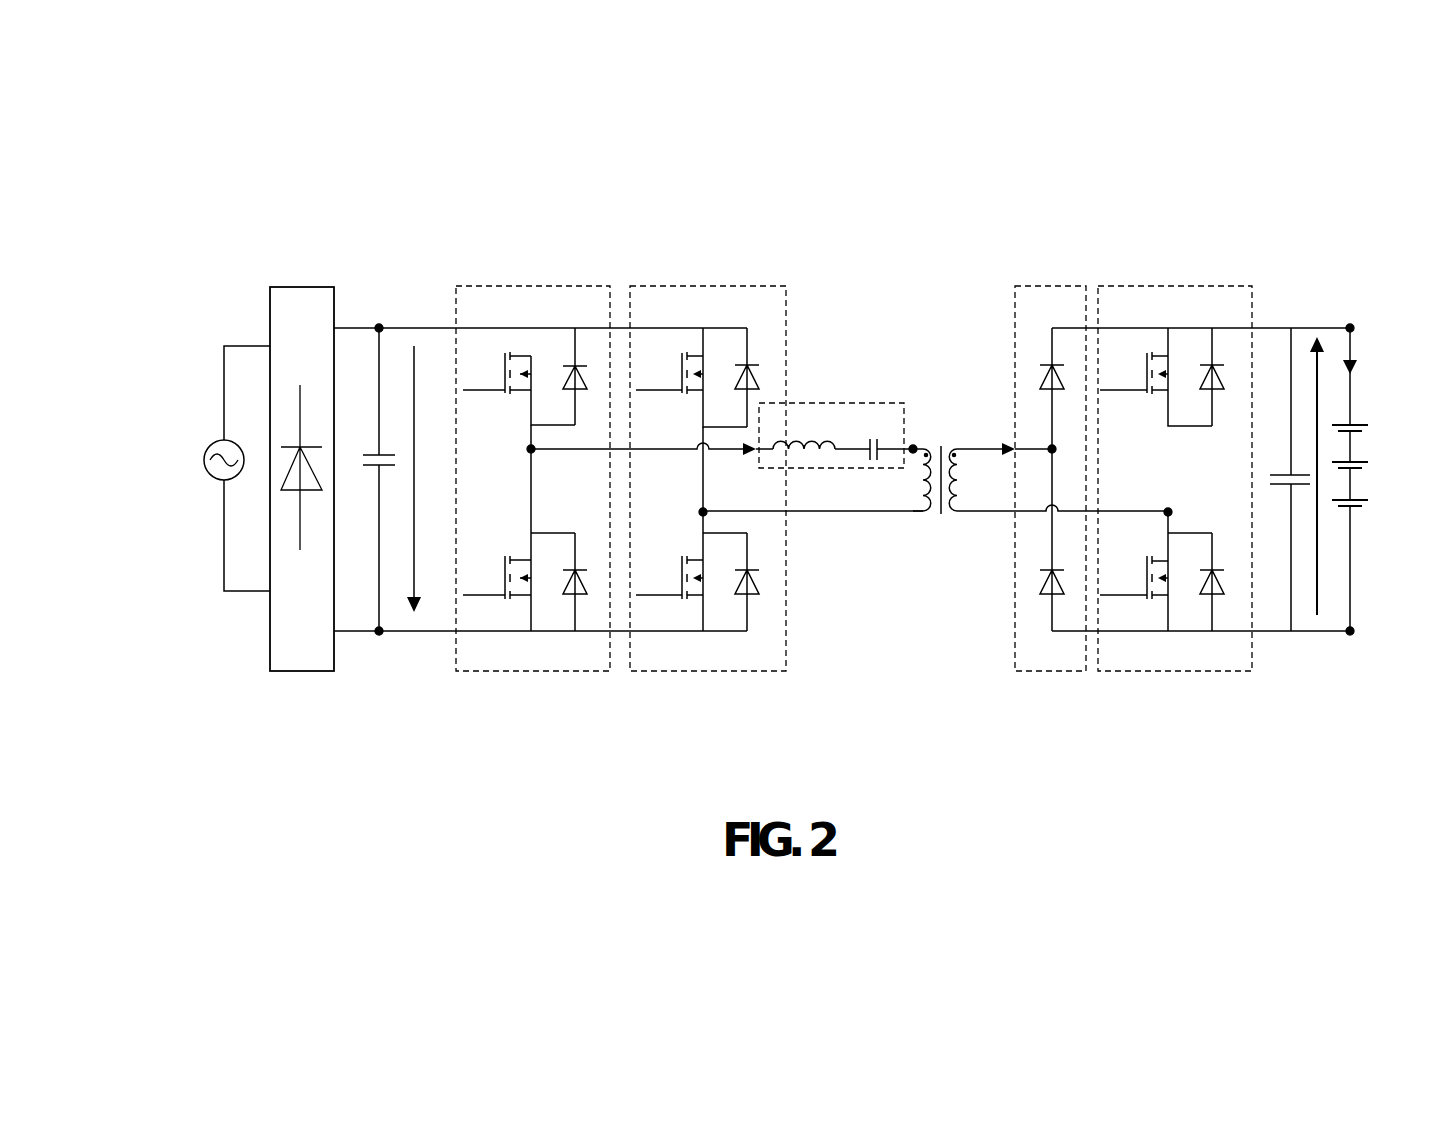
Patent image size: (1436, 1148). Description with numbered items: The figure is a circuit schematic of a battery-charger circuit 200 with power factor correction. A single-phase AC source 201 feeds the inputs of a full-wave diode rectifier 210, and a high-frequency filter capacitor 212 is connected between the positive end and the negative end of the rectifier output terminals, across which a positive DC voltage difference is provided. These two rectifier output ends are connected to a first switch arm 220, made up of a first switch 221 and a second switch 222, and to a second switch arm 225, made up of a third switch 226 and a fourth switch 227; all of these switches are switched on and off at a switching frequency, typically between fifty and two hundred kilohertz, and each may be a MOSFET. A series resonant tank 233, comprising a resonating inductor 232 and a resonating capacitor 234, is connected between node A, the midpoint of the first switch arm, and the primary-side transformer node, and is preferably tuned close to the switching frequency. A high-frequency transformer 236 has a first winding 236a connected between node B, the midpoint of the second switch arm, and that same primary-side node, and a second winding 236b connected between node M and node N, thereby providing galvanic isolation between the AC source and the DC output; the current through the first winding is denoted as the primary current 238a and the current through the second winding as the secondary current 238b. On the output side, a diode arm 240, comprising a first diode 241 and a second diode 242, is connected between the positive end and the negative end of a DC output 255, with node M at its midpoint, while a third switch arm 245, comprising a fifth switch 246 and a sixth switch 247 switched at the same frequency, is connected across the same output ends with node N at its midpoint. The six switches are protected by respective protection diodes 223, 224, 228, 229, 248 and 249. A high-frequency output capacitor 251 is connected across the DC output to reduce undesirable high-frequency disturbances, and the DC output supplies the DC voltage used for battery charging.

The battery-charger circuit 200 is at (1190, 168).
The single-phase AC source 201 is at (214, 475).
The full-wave diode rectifier 210 is at (302, 303).
The high-frequency filter Cin 212 is at (368, 462).
The first switch arm SA1 220 is at (482, 286).
The first switch S1u 221 is at (496, 377).
The second switch S1d 222 is at (484, 553).
The protection diode d1u 223 is at (573, 364).
The protection diode d1d 224 is at (583, 602).
The second switch arm SA2 225 is at (658, 286).
The third switch S2u 226 is at (667, 377).
The fourth switch S2d 227 is at (645, 553).
The protection diode d2u 228 is at (746, 364).
The protection diode d2d 229 is at (755, 602).
The resonating inductor Ls 232 is at (790, 436).
The series resonant tank 233 is at (898, 402).
The resonating capacitor Cs 234 is at (867, 422).
The high-frequency transformer TR 236 is at (925, 554).
The first winding 236a is at (918, 491).
The second winding 236b is at (964, 488).
The current ip 238a is at (745, 470).
The current is 238b is at (993, 463).
The diode arm DA1 240 is at (1040, 286).
The first diode Da 241 is at (1040, 376).
The second diode Db 242 is at (1040, 587).
The third switch arm SA3 245 is at (1122, 286).
The fifth switch S3u 246 is at (1135, 377).
The sixth switch S3d 247 is at (1105, 548).
The protection diode d3u 248 is at (1212, 364).
The protection diode d3d 249 is at (1220, 602).
The high-frequency capacitor Cout 251 is at (1303, 481).
The DC output 255 is at (1306, 322).